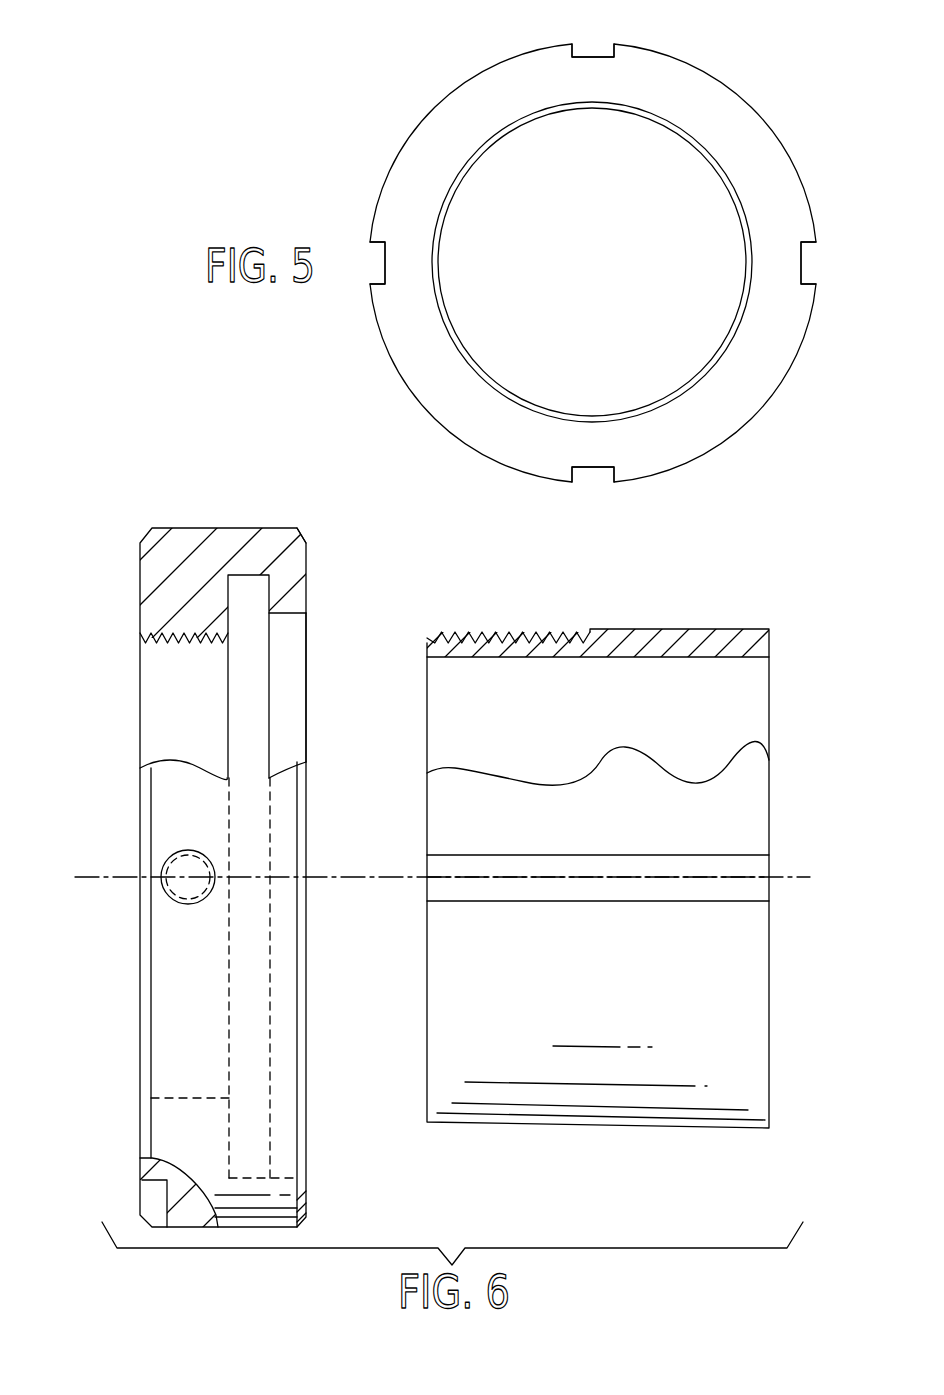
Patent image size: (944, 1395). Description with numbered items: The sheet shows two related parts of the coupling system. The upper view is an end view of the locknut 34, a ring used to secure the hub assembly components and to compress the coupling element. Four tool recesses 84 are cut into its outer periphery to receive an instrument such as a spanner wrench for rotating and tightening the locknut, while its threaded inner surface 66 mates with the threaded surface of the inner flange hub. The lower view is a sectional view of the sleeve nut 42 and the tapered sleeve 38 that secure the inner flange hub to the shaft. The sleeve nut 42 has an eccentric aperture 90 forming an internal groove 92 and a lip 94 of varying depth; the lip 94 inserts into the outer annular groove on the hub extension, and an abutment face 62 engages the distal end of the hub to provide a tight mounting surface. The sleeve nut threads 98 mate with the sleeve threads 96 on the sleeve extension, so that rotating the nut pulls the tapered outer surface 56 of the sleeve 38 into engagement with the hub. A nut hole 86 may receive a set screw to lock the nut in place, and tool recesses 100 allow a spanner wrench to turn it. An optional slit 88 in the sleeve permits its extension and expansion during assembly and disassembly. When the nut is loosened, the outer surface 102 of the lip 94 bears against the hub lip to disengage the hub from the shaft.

In FIG. 5, the locknut 34 is at (388, 90).
In FIG. 5, the tool recesses 84 is at (603, 42).
In FIG. 5, the inner surface 66 is at (673, 402).
In FIG. 6, the sleeve nut 42 is at (105, 500).
In FIG. 6, the internal groove 92 is at (240, 597).
In FIG. 6, the outer surface 102 is at (268, 597).
In FIG. 6, the abutment face 62 is at (232, 615).
In FIG. 6, the lip 94 is at (285, 597).
In FIG. 6, the eccentric aperture 90 is at (297, 635).
In FIG. 6, the sleeve nut threads 98 is at (178, 642).
In FIG. 6, the nut hole 86 is at (178, 888).
In FIG. 6, the tool recesses 100 is at (152, 1197).
In FIG. 6, the tapered sleeve 38 is at (710, 562).
In FIG. 6, the sleeve threads 96 is at (521, 636).
In FIG. 6, the tapered outer surface 56 is at (548, 637).
In FIG. 6, the slit 88 is at (708, 876).